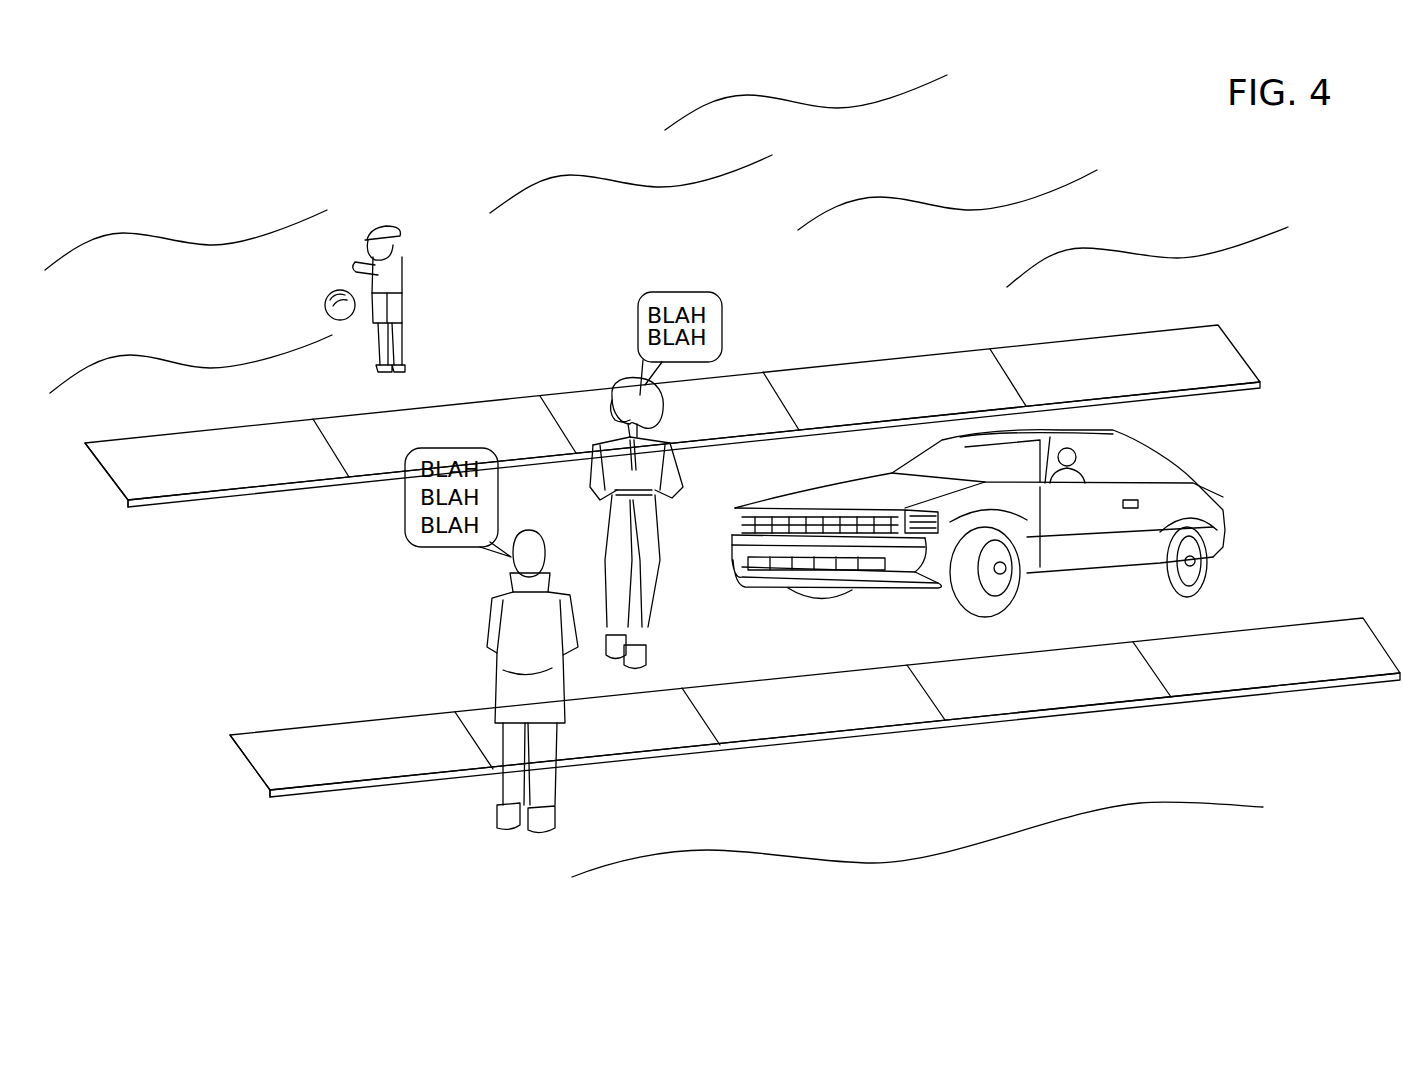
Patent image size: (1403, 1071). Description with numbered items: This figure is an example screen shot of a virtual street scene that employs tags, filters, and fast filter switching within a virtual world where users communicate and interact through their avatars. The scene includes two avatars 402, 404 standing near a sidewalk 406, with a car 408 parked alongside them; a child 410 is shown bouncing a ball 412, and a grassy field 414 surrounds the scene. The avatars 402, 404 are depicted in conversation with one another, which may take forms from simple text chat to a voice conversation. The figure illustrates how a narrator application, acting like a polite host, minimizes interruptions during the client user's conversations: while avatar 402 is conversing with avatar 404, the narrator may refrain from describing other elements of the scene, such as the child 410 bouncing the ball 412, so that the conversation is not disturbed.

The avatar 402 is at (490, 640).
The avatar 404 is at (655, 603).
The sidewalk 406 is at (833, 710).
The car 408 is at (1127, 447).
The child 410 is at (390, 227).
The ball 412 is at (325, 297).
The grassy field 414 is at (655, 92).